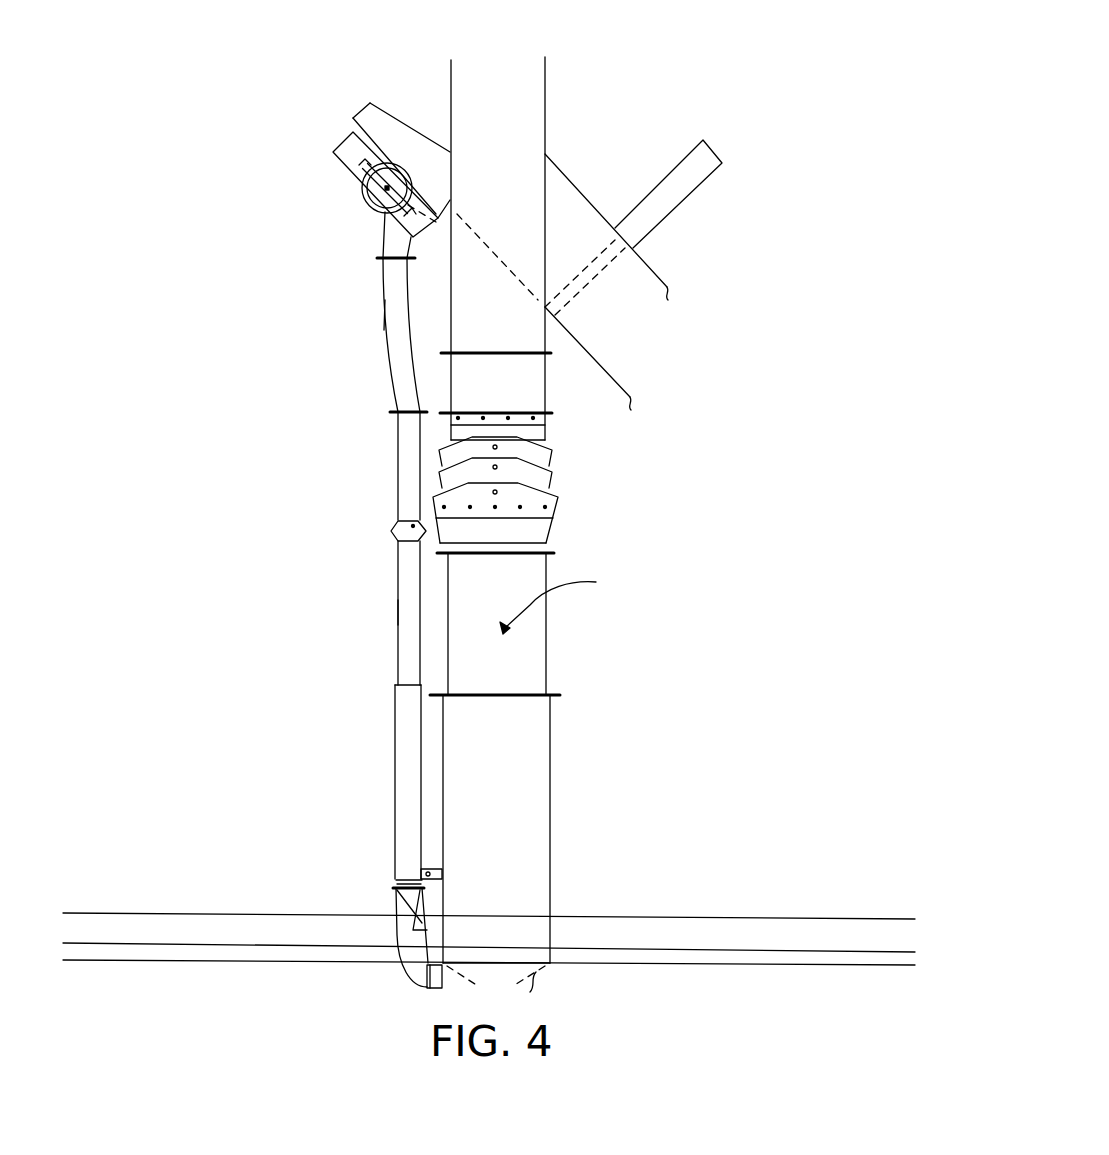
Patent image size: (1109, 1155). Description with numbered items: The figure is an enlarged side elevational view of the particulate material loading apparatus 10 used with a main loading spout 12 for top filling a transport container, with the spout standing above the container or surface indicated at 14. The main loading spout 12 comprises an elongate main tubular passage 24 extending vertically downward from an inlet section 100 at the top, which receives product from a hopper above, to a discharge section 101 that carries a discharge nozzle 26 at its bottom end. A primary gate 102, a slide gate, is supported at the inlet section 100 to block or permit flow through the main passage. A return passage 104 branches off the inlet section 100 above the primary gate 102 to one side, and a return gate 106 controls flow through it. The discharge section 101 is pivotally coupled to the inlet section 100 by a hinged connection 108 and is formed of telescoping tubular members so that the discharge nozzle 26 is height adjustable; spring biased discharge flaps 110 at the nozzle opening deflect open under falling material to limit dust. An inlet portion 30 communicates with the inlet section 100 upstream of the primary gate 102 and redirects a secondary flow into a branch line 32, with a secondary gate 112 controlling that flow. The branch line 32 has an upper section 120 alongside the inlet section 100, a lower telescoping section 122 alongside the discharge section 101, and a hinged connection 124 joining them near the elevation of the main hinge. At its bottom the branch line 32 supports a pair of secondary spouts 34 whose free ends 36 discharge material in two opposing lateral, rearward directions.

The particulate material loading apparatus 10 is at (345, 70).
The main loading spout 12 is at (501, 68).
The roof 14 is at (731, 886).
The main tubular passage 24 is at (563, 602).
The discharge nozzle 26 is at (548, 906).
The inlet portion 30 is at (440, 170).
The branch line 32 is at (392, 373).
The secondary spouts 34 is at (403, 937).
The free end 36 is at (427, 974).
The inlet section 100 is at (548, 100).
The discharge section 101 is at (546, 661).
The primary gate 102 is at (486, 240).
The return passage 104 is at (669, 263).
The return gate 106 is at (578, 289).
The hinged connection 108 is at (500, 470).
The discharge flaps 110 is at (478, 980).
The secondary gate 112 is at (385, 228).
The upper section 120 is at (387, 312).
The lower section 122 is at (397, 612).
The hinged connection 124 is at (412, 527).